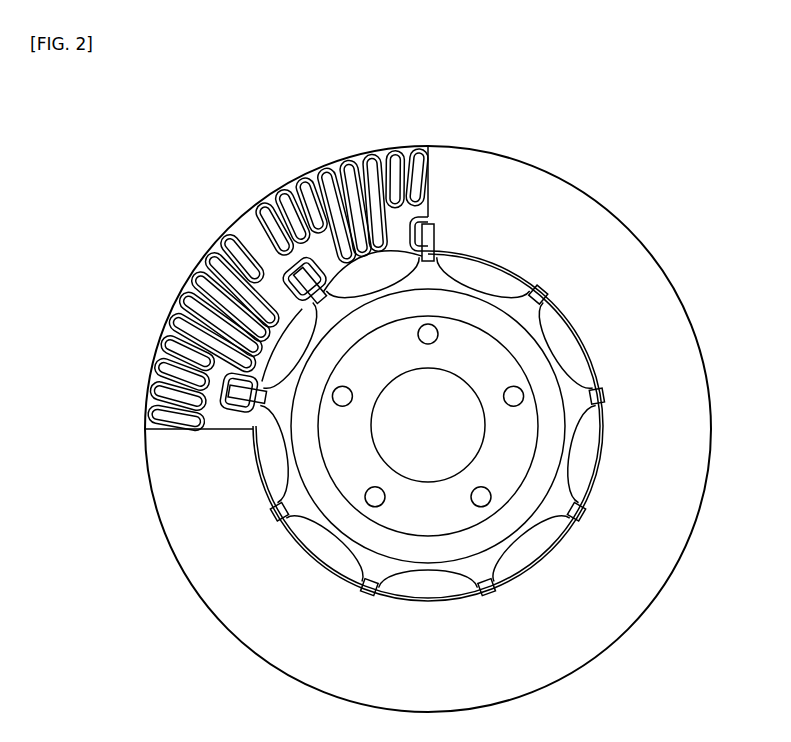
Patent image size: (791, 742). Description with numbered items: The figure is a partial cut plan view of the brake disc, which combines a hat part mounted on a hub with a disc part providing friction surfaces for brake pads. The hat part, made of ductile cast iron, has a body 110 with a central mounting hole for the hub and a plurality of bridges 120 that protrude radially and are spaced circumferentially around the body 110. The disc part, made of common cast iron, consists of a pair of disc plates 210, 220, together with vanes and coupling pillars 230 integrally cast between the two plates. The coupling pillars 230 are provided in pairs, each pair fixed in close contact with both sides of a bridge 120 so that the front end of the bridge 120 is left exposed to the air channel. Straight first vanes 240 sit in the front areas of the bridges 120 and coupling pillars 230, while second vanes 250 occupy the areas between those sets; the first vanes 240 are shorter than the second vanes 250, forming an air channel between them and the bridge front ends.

The body 110 is at (522, 352).
The bridge 120 is at (242, 397).
The disc plate 210 is at (562, 193).
The disc plate 220 is at (322, 175).
The coupling pillar 230 is at (303, 257).
The first vane 240 is at (156, 369).
The second vane 250 is at (203, 257).